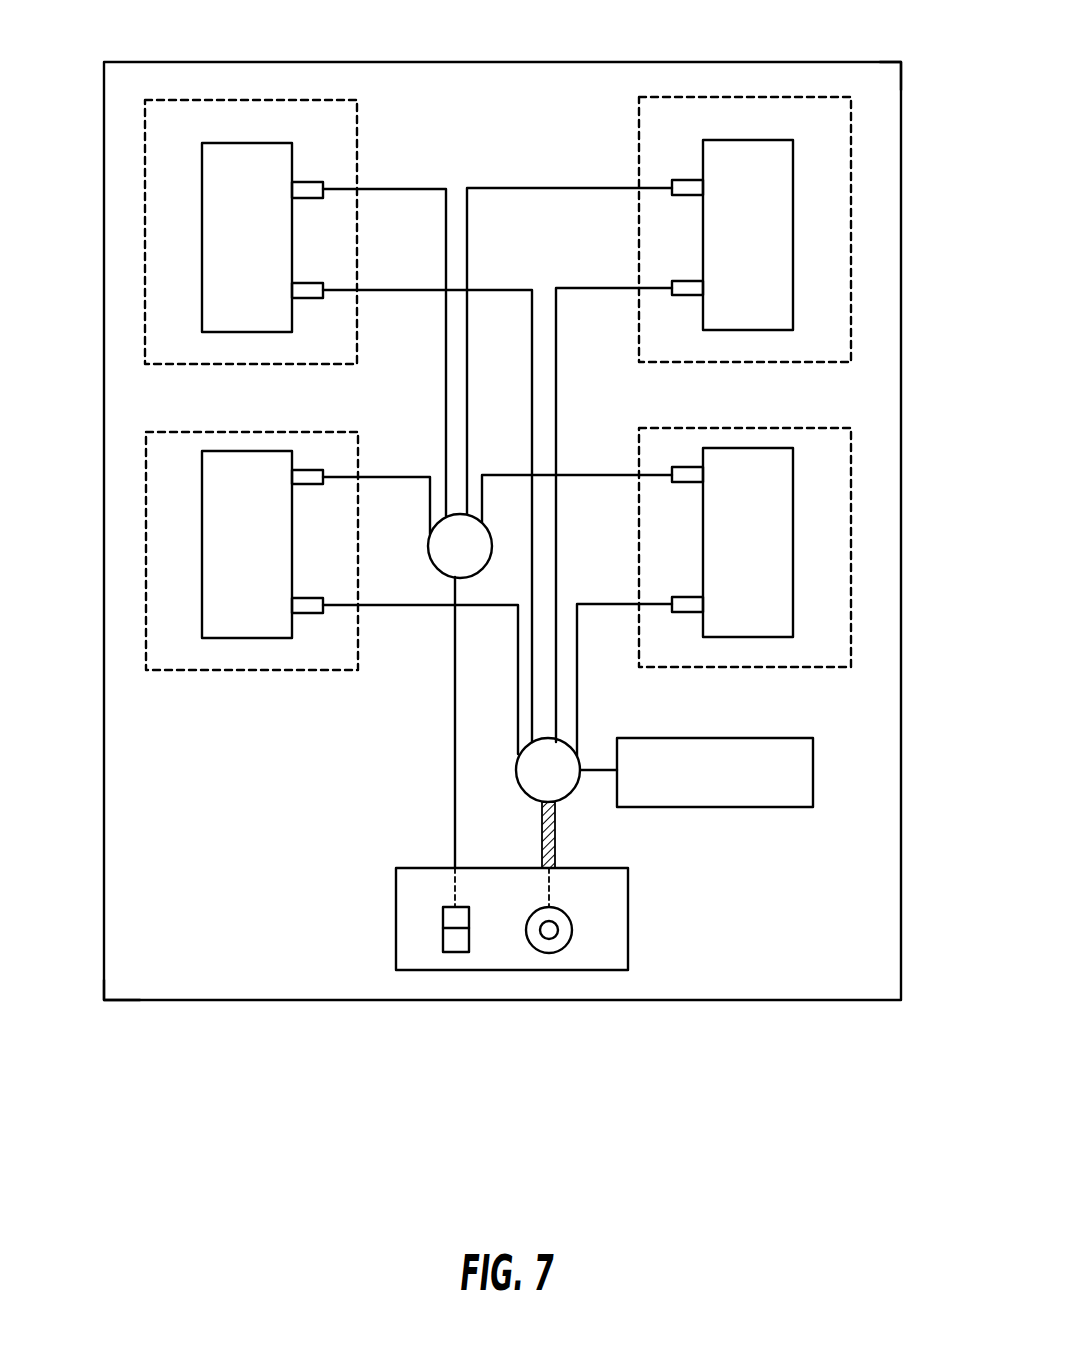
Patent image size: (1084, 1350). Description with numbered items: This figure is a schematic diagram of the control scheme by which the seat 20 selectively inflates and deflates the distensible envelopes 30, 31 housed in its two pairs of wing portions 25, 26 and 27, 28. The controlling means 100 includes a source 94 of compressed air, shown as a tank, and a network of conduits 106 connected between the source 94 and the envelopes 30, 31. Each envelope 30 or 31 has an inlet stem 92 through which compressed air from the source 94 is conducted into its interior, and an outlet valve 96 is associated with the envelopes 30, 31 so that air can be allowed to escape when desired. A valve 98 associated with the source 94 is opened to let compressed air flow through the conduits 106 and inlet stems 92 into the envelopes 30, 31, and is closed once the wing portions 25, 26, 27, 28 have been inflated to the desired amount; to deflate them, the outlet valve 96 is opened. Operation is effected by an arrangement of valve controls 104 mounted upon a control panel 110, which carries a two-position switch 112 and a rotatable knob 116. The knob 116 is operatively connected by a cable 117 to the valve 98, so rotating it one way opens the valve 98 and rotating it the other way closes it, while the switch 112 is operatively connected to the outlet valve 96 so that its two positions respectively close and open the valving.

The vehicle seat 20 is at (855, 62).
The wing portion 25 is at (146, 606).
The wing portion 26 is at (851, 620).
The wing portion 27 is at (145, 165).
The wing portion 28 is at (852, 155).
The distensible envelope 30 is at (202, 575).
The distensible envelope 31 is at (202, 262).
The inlet stem 92 is at (303, 298).
The source 94 is at (813, 780).
The outlet valve 96 is at (445, 576).
The valve 98 is at (516, 772).
The controlling means 100 is at (457, 1097).
The arrangement of valve controls 104 is at (367, 1029).
The network of conduits 106 is at (601, 60).
The control panel 110 is at (607, 970).
The two-position switch 112 is at (456, 952).
The rotatable knob 116 is at (549, 953).
The cable 117 is at (557, 835).